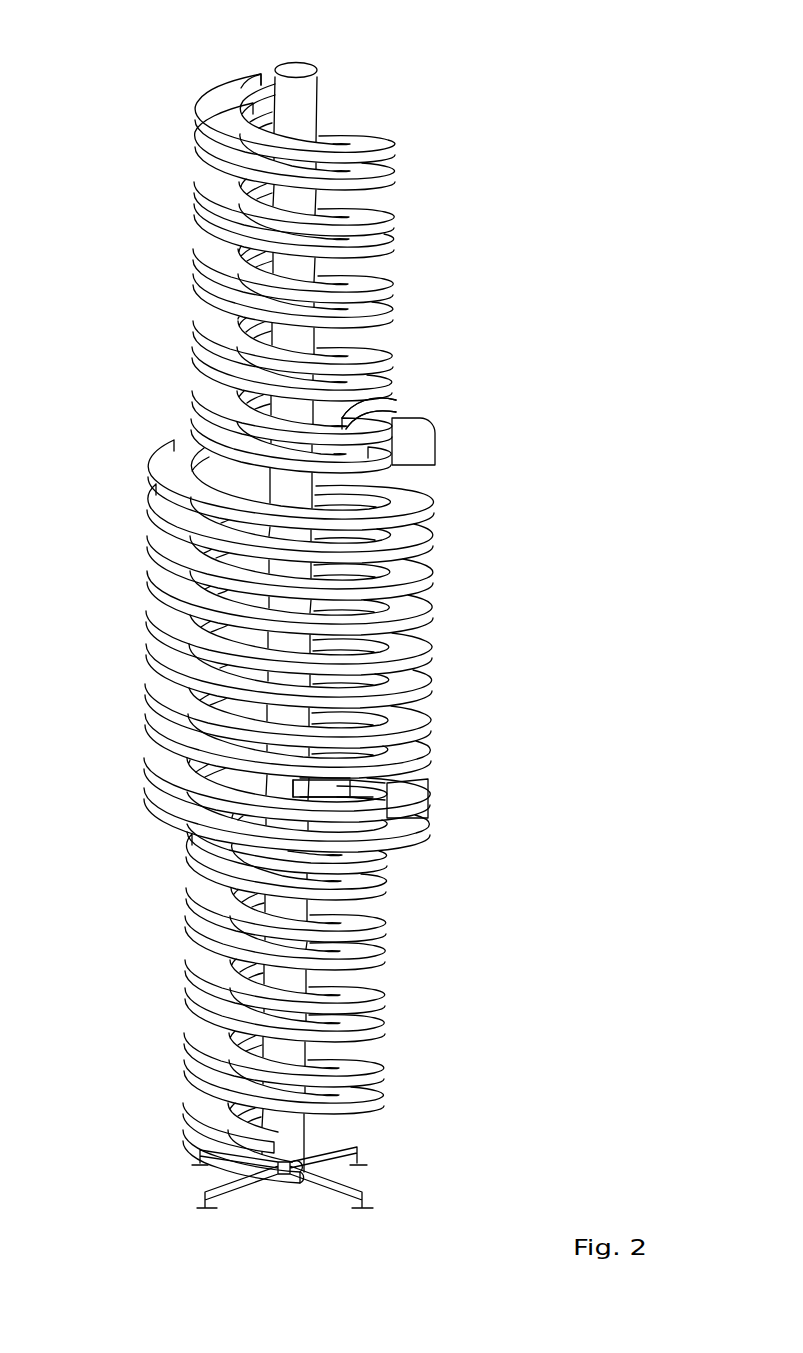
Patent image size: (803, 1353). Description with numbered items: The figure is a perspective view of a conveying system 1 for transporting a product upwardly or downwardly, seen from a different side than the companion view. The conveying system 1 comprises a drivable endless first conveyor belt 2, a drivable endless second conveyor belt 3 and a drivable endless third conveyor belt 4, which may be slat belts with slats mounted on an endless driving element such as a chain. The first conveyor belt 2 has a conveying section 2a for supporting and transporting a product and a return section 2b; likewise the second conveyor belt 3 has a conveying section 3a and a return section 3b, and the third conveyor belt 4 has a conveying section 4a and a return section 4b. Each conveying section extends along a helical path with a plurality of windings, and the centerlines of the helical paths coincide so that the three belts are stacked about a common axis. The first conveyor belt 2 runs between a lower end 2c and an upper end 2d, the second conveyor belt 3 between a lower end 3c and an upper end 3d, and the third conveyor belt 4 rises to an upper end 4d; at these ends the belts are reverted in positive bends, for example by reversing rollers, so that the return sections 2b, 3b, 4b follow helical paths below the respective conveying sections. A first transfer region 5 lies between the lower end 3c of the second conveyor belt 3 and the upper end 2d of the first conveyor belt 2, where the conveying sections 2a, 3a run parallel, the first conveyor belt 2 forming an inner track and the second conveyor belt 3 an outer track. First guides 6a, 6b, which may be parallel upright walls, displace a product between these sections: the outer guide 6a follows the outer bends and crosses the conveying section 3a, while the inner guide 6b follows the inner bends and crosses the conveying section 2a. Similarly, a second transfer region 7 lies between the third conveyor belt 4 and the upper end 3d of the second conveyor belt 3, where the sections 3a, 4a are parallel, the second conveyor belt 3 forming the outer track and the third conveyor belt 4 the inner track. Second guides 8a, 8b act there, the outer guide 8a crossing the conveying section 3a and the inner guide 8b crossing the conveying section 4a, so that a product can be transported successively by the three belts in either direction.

The conveying system 1 is at (405, 78).
The first conveyor belt 2 is at (339, 998).
The conveying section of the first conveyor belt 2a is at (362, 1002).
The return section of the first conveyor belt 2b is at (357, 1031).
The lower end of the helical path of the first conveyor belt 2c is at (285, 1143).
The upper end of the helical path of the first conveyor belt 2d is at (285, 788).
The second conveyor belt 3 is at (348, 646).
The conveying section of the second conveyor belt 3a is at (407, 639).
The return section of the second conveyor belt 3b is at (407, 676).
The lower end of the helical path of the second conveyor belt 3c is at (407, 790).
The upper end of the helical path of the second conveyor belt 3d is at (417, 445).
The third conveyor belt 4 is at (344, 246).
The conveying section of the third conveyor belt 4a is at (375, 289).
The return section of the third conveyor belt 4b is at (367, 316).
The upper end of the helical path of the third conveyor belt 4d is at (268, 68).
The first transfer region 5 is at (400, 776).
The outer first guide 6a is at (373, 795).
The inner first guide 6b is at (350, 777).
The second transfer region 7 is at (425, 387).
The outer second guide 8a is at (383, 404).
The inner second guide 8b is at (340, 409).